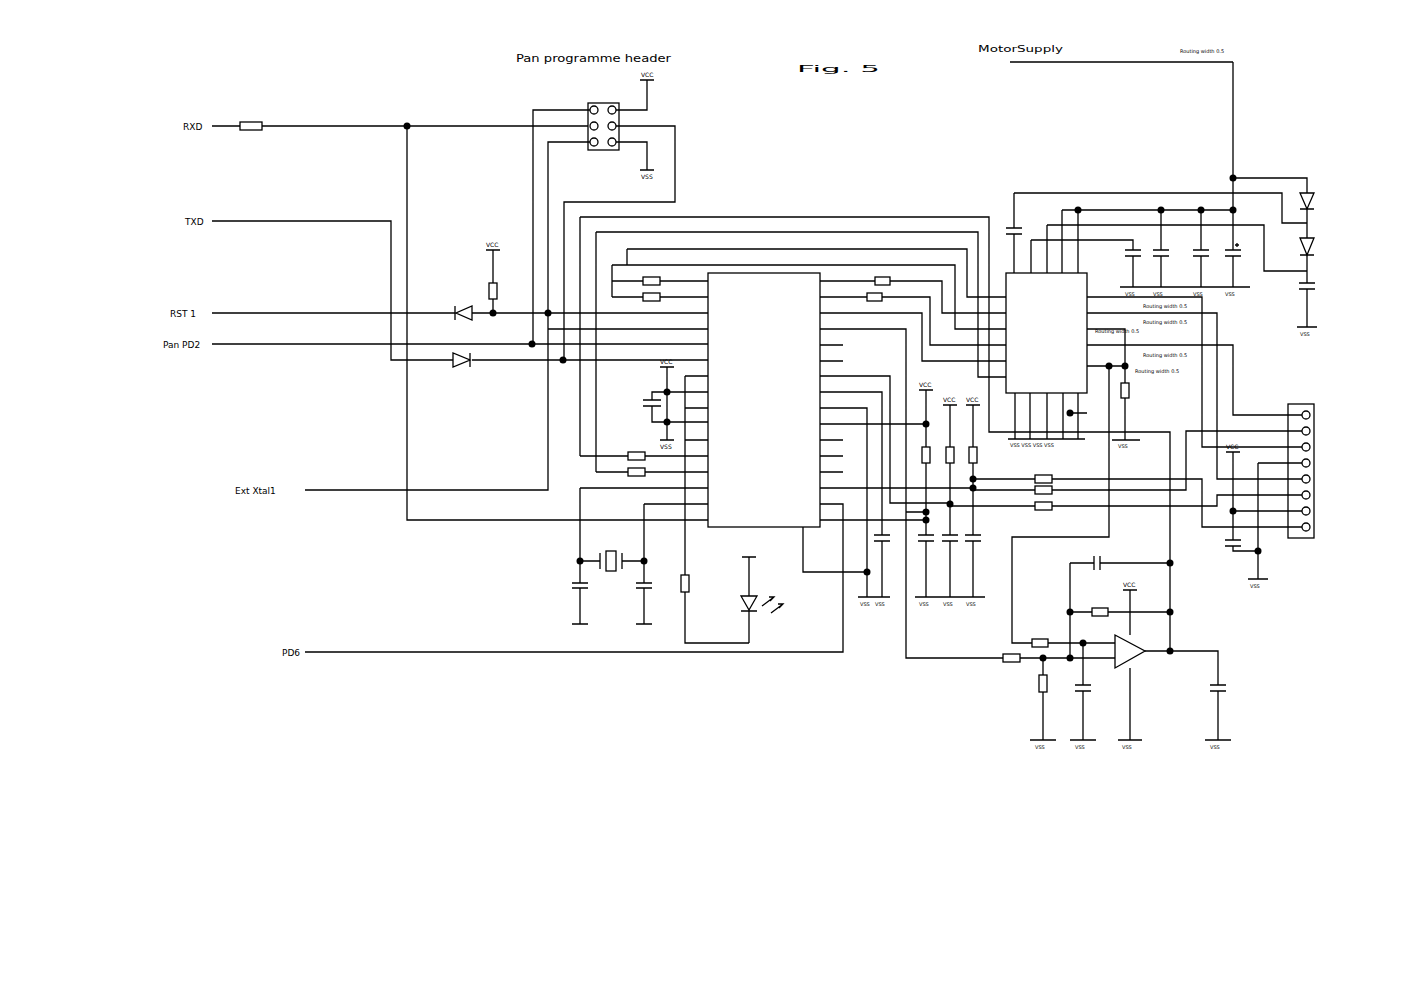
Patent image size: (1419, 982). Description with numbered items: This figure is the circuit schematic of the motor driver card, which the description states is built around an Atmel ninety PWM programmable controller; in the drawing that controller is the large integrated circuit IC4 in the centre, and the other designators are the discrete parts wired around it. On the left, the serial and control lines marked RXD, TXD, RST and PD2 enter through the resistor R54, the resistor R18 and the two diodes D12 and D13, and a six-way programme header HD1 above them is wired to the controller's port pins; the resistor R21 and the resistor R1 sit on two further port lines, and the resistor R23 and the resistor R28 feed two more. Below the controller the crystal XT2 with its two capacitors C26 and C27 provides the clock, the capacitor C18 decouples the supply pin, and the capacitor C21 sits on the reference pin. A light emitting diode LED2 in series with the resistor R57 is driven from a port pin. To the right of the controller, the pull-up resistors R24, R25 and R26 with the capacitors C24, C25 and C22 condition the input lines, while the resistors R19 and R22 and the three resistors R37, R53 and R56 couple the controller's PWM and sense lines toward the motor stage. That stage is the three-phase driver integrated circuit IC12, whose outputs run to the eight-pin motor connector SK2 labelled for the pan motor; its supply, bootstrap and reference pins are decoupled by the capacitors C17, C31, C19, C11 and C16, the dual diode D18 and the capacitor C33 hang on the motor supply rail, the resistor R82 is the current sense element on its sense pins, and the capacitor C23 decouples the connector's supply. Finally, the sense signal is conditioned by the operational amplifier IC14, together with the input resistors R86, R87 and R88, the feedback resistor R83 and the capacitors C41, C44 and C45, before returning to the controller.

The resistor 1K (RXD) R54 is at (251, 134).
The resistor 47K (reset pull-up) R18 is at (509, 287).
The diode TS4148 D12 is at (454, 296).
The diode TS4148 D13 is at (459, 375).
The 6 way programme header HD1 is at (600, 139).
The resistor 1K R21 is at (647, 268).
The resistor 1K R1 is at (647, 301).
The microcontroller AT90PWM3 IC4 is at (763, 408).
The capacitor 100nf C18 is at (638, 400).
The resistor 1K R23 is at (636, 445).
The resistor 1K R28 is at (636, 484).
The crystal 16MHz XT2 is at (612, 552).
The capacitor 12pf C26 is at (565, 597).
The capacitor 12pf C27 is at (628, 597).
The resistor 820R R57 is at (697, 588).
The LED TLMH3100 LED2 is at (771, 595).
The capacitor 100nf C21 is at (857, 546).
The resistor 4K7 R24 is at (912, 455).
The resistor 4K7 R25 is at (949, 440).
The resistor 4K7 R26 is at (986, 452).
The capacitor 1nf C24 is at (918, 553).
The capacitor 1nf C25 is at (954, 553).
The capacitor 1nf C22 is at (979, 553).
The resistor 1K R19 is at (877, 268).
The resistor 1K R22 is at (880, 301).
The resistor 100R R37 is at (1019, 478).
The resistor 100R R53 is at (1019, 490).
The resistor 100R R56 is at (1019, 505).
The motor driver L6234 IC12 is at (1048, 338).
The capacitor 10nf C17 is at (1023, 217).
The capacitor 100nf C31 is at (1111, 264).
The capacitor 100nf C19 is at (1184, 242).
The capacitor 100nf C11 is at (1171, 267).
The capacitor 100uF/50V C16 is at (1237, 264).
The dual diode BAR43AS D18 is at (1329, 224).
The capacitor 220nf C33 is at (1322, 294).
The resistor 1R (sense) R82 is at (1133, 399).
The 8 pin plug motor connector SK2 is at (1311, 490).
The capacitor 100nf C23 is at (1213, 543).
The resistor 2K2 R86 is at (1038, 635).
The resistor O/C R87 is at (1000, 665).
The resistor 2K2 R88 is at (1027, 692).
The resistor 10K R83 is at (1099, 611).
The capacitor 100nf C41 is at (1093, 577).
The capacitor 10nf C44 is at (1094, 695).
The op-amp MCP6001 IC14 is at (1141, 656).
The capacitor 100nf C45 is at (1234, 685).